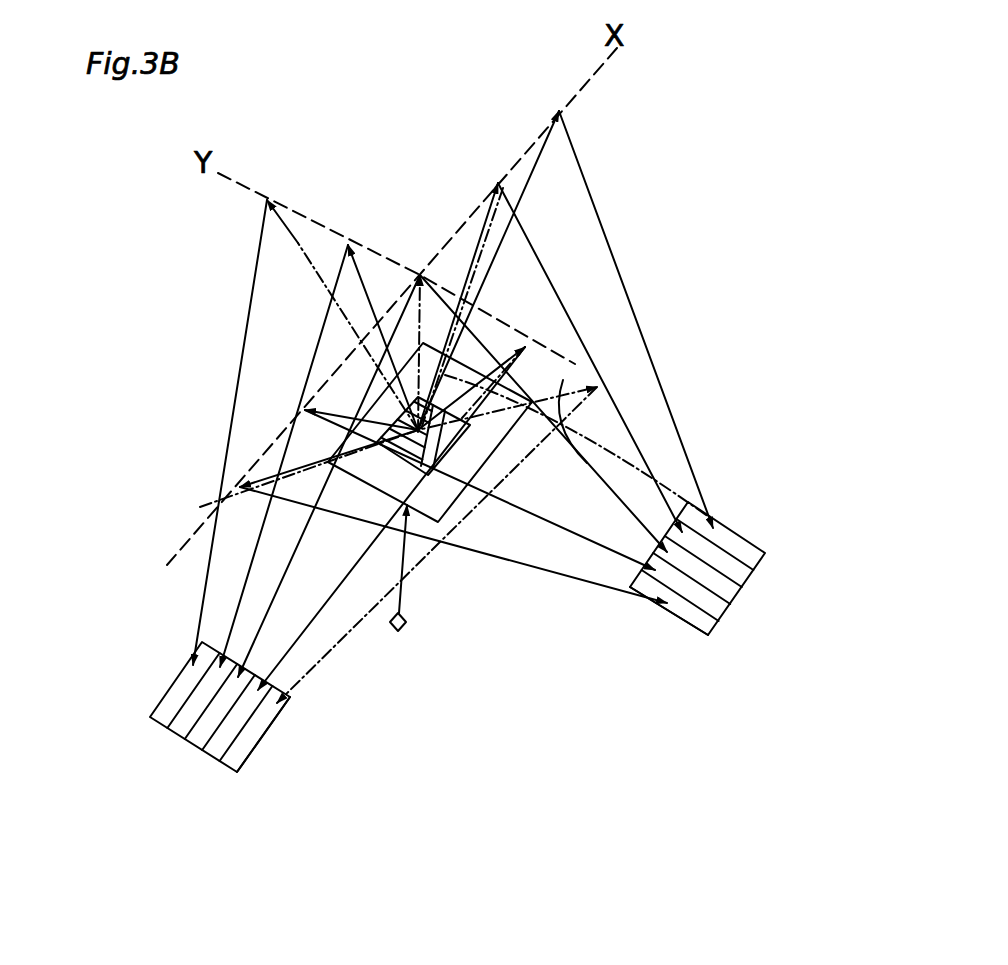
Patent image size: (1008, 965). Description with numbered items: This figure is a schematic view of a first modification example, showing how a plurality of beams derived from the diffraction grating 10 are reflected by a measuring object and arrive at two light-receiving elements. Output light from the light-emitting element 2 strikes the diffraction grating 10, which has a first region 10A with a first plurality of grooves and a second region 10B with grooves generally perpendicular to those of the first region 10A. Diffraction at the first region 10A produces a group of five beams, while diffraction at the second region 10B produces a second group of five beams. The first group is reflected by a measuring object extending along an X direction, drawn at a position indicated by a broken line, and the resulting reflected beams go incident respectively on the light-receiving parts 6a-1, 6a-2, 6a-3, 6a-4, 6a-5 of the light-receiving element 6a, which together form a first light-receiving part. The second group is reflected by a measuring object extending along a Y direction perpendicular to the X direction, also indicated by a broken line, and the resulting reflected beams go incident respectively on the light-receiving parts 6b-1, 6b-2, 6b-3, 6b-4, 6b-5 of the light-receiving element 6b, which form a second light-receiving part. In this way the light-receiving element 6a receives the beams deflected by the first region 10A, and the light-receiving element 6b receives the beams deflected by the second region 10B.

The light-emitting element 2 is at (410, 616).
The diffraction grating 10 is at (392, 463).
The first region 10A is at (390, 418).
The second region 10B is at (458, 451).
The light-receiving element 6a is at (673, 618).
The light-receiving part 6a-1 is at (713, 630).
The light-receiving part 6a-2 is at (724, 612).
The light-receiving part 6a-3 is at (736, 595).
The light-receiving part 6a-4 is at (748, 578).
The light-receiving part 6a-5 is at (759, 561).
The light-receiving element 6b is at (266, 742).
The light-receiving part 6b-1 is at (159, 722).
The light-receiving part 6b-2 is at (176, 733).
The light-receiving part 6b-3 is at (194, 744).
The light-receiving part 6b-4 is at (211, 755).
The light-receiving part 6b-5 is at (228, 766).